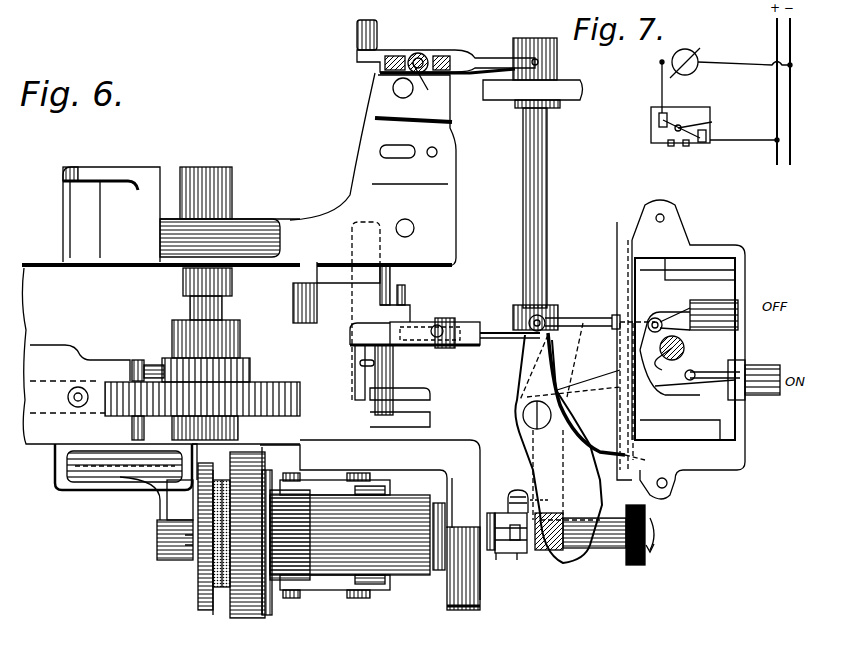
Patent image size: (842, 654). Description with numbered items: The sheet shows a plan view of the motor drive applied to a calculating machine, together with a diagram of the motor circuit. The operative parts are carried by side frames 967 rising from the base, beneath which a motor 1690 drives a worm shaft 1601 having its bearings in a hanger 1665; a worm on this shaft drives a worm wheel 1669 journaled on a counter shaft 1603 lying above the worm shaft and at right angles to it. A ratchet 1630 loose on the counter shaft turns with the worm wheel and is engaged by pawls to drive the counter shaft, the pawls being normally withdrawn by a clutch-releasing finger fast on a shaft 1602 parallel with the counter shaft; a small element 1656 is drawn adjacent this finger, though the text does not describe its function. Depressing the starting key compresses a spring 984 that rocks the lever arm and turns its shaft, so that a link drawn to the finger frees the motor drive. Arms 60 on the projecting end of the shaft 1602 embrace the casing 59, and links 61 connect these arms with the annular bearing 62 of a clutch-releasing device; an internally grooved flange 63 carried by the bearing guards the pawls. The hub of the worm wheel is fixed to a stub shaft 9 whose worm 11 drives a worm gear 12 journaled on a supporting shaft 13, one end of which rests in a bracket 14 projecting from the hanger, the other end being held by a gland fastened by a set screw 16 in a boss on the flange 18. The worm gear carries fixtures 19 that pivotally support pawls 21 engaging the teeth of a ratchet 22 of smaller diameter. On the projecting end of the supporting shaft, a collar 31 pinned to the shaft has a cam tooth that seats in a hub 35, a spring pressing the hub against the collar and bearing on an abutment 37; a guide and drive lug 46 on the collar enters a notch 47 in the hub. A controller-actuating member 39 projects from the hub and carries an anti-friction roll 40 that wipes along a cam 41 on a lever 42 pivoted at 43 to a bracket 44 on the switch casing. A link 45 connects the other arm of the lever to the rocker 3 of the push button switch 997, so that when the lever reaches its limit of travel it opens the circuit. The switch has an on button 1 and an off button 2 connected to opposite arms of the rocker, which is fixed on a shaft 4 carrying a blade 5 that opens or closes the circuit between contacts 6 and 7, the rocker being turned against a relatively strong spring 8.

In FIG. 6, the spring 984 is at (386, 170).
In FIG. 6, the side frames 967 is at (498, 100).
In FIG. 6, the hanger 1665 is at (312, 218).
In FIG. 6, the shaft 1602 is at (383, 256).
In FIG. 6, the counter shaft 1603 is at (192, 305).
In FIG. 6, the stud 1656 is at (406, 298).
In FIG. 6, the ratchet 1630 is at (242, 338).
In FIG. 6, the link 45 is at (588, 318).
In FIG. 6, the worm shaft 1601 is at (98, 378).
In FIG. 6, the worm wheel 1669 is at (278, 374).
In FIG. 6, the off button 2 is at (738, 330).
In FIG. 7, the off button 2 is at (686, 146).
In FIG. 6, the rocker 3 is at (686, 342).
In FIG. 6, the shaft 4 is at (684, 350).
In FIG. 7, the shaft 4 is at (681, 128).
In FIG. 6, the spring 8 is at (680, 413).
In FIG. 6, the push button switch 997 is at (695, 402).
In FIG. 7, the push button switch 997 is at (651, 133).
In FIG. 6, the on button 1 is at (770, 396).
In FIG. 7, the on button 1 is at (670, 146).
In FIG. 6, the pivot 43 is at (528, 415).
In FIG. 6, the bracket 44 is at (576, 396).
In FIG. 6, the lever 42 is at (592, 455).
In FIG. 6, the links 61 is at (332, 480).
In FIG. 6, the arms 60 is at (385, 480).
In FIG. 6, the casing 59 is at (420, 500).
In FIG. 6, the anti-friction roll 40 is at (513, 490).
In FIG. 6, the controller-actuating member 39 is at (538, 505).
In FIG. 6, the cam 41 is at (560, 515).
In FIG. 6, the supporting shaft 13 is at (493, 515).
In FIG. 6, the stub shaft 9 is at (158, 500).
In FIG. 6, the bracket 14 is at (160, 525).
In FIG. 6, the worm 11 is at (185, 538).
In FIG. 6, the fixtures 19 is at (230, 522).
In FIG. 6, the pawls 21 is at (228, 540).
In FIG. 6, the worm gear 12 is at (198, 596).
In FIG. 6, the ratchet 22 is at (216, 612).
In FIG. 6, the internally grooved flange 63 is at (250, 618).
In FIG. 6, the annular bearing 62 is at (275, 575).
In FIG. 6, the set screw 16 is at (432, 560).
In FIG. 6, the flange 18 is at (458, 610).
In FIG. 6, the notch 47 is at (512, 540).
In FIG. 6, the collar 31 is at (512, 555).
In FIG. 6, the guide and drive lug 46 is at (497, 556).
In FIG. 6, the hub 35 is at (555, 563).
In FIG. 6, the abutment 37 is at (613, 552).
In FIG. 7, the motor 1690 is at (700, 58).
In FIG. 7, the contact 6 is at (668, 118).
In FIG. 7, the blade 5 is at (712, 124).
In FIG. 7, the contact 7 is at (708, 136).